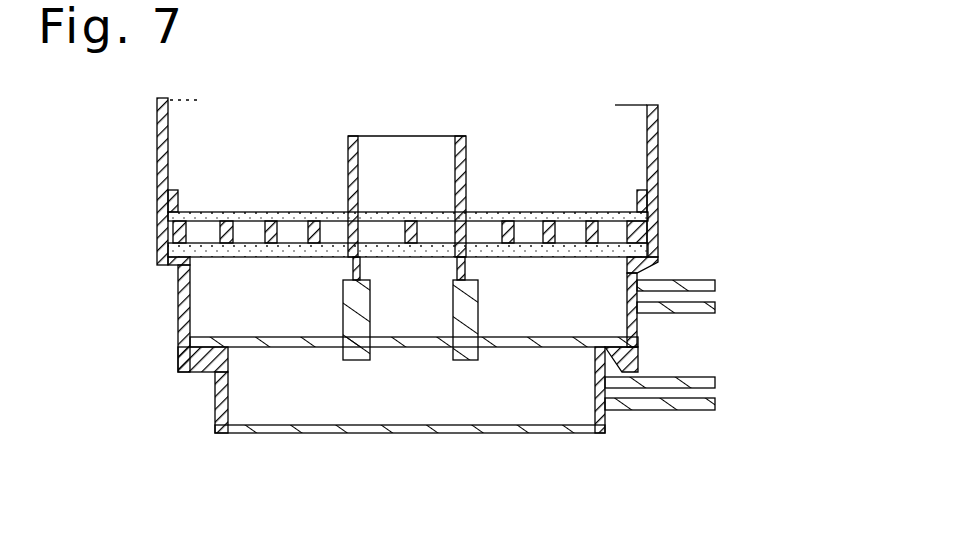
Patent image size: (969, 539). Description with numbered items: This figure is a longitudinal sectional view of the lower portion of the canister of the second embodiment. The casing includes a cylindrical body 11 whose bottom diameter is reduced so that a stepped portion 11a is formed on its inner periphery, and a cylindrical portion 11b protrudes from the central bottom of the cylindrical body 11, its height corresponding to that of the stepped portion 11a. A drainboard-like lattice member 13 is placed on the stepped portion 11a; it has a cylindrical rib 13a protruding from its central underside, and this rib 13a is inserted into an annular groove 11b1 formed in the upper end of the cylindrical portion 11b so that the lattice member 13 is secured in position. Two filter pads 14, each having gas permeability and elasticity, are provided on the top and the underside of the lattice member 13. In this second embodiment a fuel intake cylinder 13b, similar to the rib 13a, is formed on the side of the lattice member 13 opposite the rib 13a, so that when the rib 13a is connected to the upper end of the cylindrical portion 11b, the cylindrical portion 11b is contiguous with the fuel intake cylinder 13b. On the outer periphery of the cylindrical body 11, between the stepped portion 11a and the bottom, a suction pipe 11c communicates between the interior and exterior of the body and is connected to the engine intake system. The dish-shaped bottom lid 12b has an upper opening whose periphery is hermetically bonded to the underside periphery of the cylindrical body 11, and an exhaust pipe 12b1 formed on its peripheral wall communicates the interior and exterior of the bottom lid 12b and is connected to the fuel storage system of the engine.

The cylindrical body 11 is at (658, 172).
The stepped portion 11a is at (658, 235).
The cylindrical portion 11b is at (490, 320).
The annular groove 11b1 is at (463, 283).
The suction pipe 11c is at (700, 276).
The bottom lid 12b is at (443, 435).
The exhaust pipe 12b1 is at (660, 410).
The lattice member 13 is at (600, 212).
The cylindrical rib 13a is at (470, 279).
The fuel intake cylinder 13b is at (466, 150).
The filter pad 14 is at (200, 212).